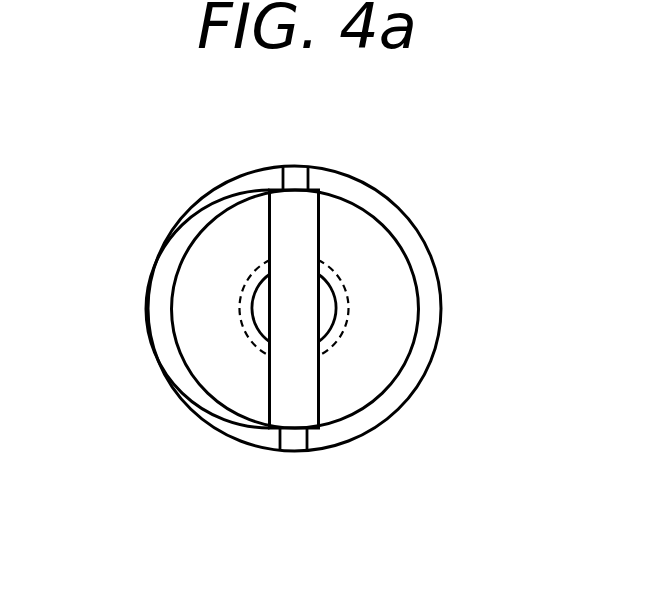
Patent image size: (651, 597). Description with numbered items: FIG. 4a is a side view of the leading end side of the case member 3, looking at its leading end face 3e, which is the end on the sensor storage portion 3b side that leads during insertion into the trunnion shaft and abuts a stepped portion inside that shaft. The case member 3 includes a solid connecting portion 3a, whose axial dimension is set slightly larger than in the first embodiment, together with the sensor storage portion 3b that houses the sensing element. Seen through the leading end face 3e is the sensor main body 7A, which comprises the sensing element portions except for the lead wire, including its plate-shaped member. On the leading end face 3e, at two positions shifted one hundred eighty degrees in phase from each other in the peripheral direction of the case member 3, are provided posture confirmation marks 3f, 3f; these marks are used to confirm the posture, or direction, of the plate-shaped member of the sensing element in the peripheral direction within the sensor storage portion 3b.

The case member 3 is at (110, 334).
The connecting portion 3a is at (340, 280).
The sensor storage portion 3b is at (212, 384).
The leading end face 3e is at (423, 345).
The posture confirmation marks 3f is at (307, 172).
The sensor main body 7A is at (295, 378).